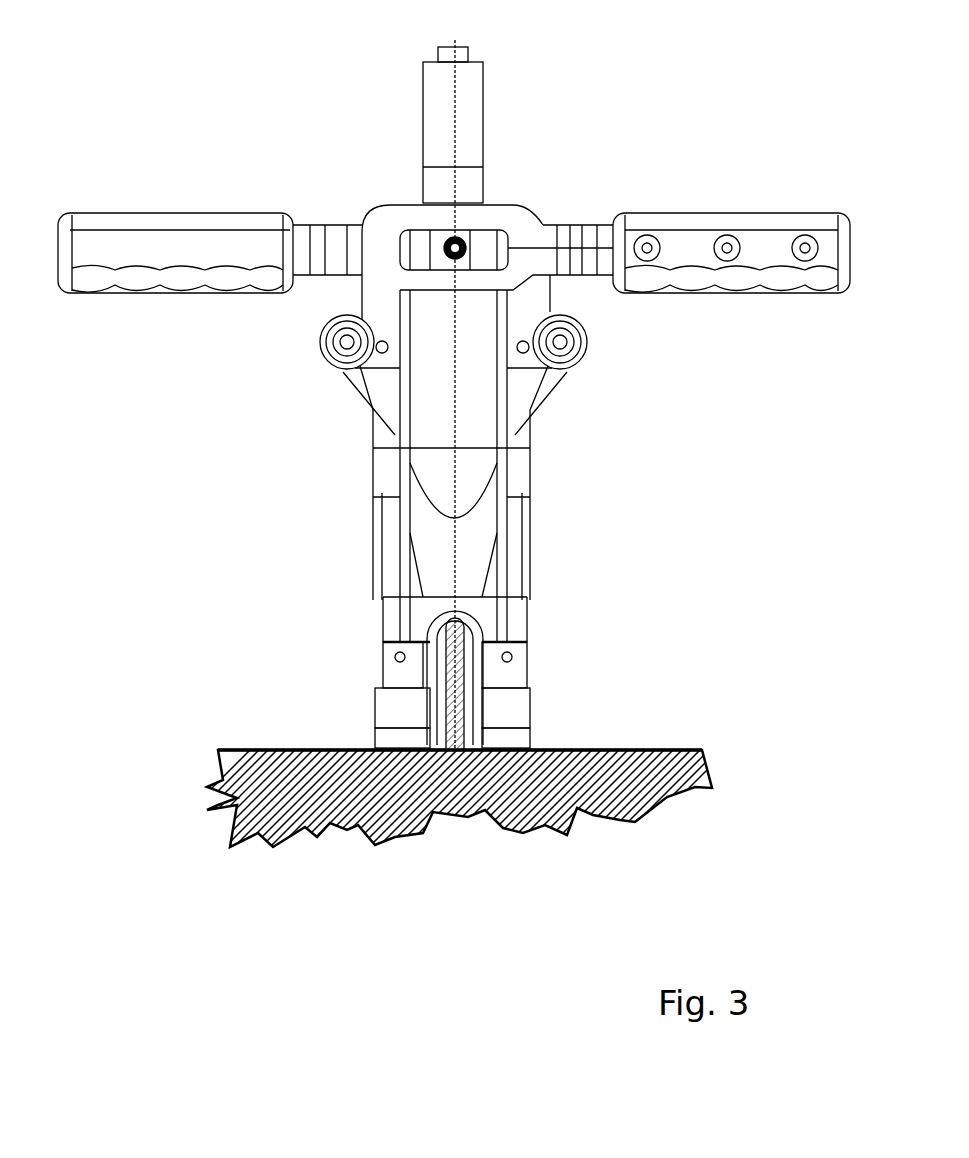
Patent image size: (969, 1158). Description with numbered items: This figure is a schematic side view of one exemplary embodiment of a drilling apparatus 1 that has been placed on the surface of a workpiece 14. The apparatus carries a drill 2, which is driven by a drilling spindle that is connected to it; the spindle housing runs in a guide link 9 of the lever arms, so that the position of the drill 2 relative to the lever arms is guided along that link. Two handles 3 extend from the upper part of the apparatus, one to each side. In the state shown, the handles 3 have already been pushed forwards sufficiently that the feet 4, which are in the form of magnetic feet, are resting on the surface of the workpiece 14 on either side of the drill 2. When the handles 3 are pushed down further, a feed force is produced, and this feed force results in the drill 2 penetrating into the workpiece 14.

The drilling apparatus 1 is at (266, 470).
The drill 2 is at (455, 668).
The handles 3 is at (185, 247).
The feet 4 is at (387, 740).
The guide link 9 is at (458, 245).
The workpiece 14 is at (352, 807).